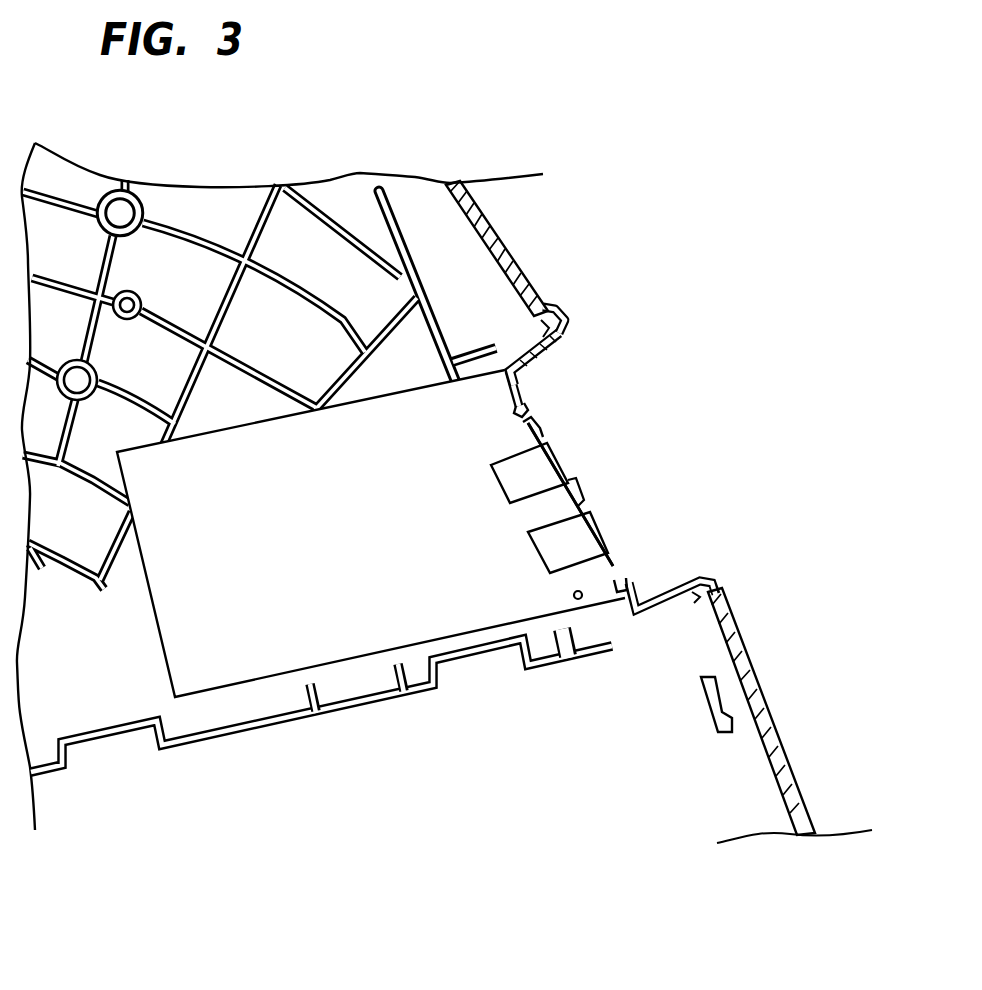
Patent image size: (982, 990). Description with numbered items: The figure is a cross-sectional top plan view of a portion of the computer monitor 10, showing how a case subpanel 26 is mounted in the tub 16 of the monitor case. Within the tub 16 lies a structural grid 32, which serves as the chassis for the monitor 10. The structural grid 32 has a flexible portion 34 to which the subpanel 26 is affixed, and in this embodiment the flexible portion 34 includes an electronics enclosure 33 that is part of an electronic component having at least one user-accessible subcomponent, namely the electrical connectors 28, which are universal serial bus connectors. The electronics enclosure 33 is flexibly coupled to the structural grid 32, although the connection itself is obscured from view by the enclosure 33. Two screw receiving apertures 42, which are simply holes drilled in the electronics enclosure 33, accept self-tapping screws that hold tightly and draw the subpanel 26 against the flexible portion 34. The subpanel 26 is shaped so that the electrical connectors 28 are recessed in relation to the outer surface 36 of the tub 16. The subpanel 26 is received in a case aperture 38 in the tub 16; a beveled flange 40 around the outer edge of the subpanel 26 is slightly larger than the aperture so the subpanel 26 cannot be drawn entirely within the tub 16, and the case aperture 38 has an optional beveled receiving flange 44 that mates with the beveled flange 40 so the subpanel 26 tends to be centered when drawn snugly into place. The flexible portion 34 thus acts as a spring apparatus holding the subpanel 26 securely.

The computer monitor 10 is at (636, 191).
The tub 16 is at (722, 618).
The case subpanel 26 is at (566, 337).
The electrical connectors 28 is at (555, 458).
The structural grid 32 is at (343, 318).
The electronics enclosure 33 is at (289, 512).
The flexible portion 34 is at (508, 380).
The outer surface 36 is at (501, 236).
The case aperture 38 is at (637, 457).
The beveled flange 40 is at (565, 322).
The screw receiving apertures 42 is at (525, 413).
The receiving flange 44 is at (536, 327).